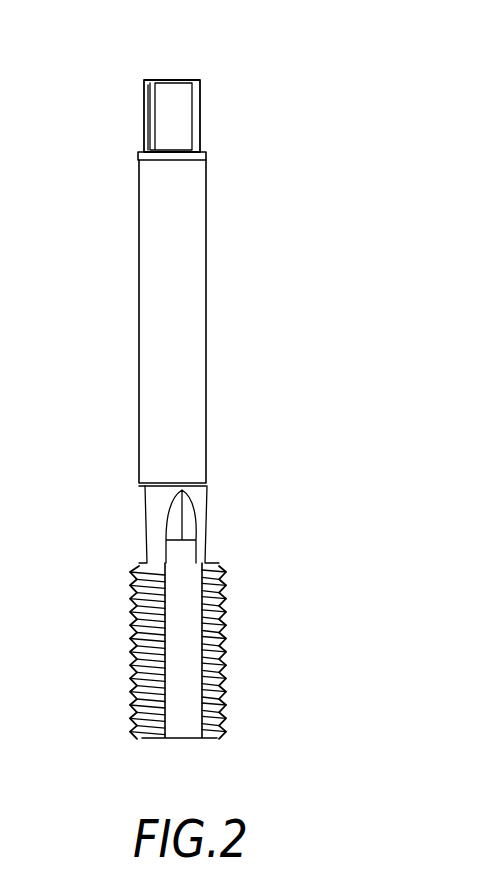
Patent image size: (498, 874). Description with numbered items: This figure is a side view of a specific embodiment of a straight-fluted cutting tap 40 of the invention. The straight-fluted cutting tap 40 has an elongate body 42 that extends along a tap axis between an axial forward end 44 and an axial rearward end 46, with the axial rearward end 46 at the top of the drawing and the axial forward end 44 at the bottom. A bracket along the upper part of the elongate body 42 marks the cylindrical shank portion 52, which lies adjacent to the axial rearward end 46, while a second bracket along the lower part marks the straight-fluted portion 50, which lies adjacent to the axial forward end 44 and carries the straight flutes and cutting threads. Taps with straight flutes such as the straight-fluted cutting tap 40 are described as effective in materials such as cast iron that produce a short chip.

The straight-fluted cutting tap 40 is at (368, 180).
The elongate body 42 is at (206, 290).
The axial forward end 44 is at (181, 740).
The axial rearward end 46 is at (178, 80).
The straight-fluted portion 50 is at (100, 571).
The cylindrical shank portion 52 is at (96, 82).